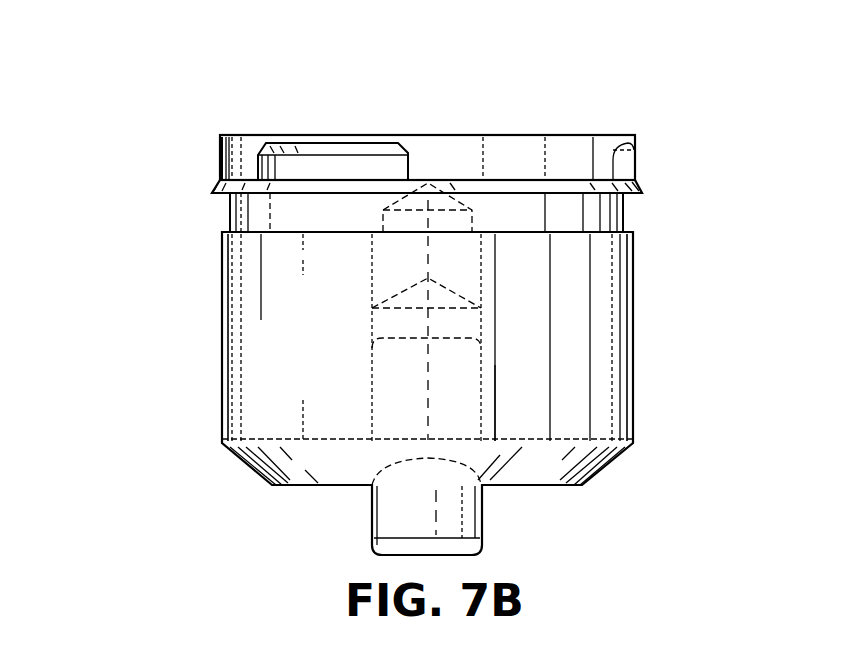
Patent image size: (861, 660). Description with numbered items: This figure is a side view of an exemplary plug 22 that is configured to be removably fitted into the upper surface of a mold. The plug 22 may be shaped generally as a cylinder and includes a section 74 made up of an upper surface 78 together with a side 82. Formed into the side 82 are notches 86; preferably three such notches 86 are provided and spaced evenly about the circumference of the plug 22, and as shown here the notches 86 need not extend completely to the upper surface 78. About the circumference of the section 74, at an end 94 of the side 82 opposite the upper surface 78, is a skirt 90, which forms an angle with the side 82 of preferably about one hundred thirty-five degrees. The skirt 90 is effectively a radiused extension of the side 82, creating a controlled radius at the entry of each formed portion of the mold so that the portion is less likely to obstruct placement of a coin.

The plug 22 is at (713, 360).
The section 74 is at (190, 176).
The upper surface 78 is at (520, 135).
The side 82 is at (218, 155).
The notches 86 is at (312, 168).
The skirt 90 is at (641, 185).
The end 94 is at (650, 195).